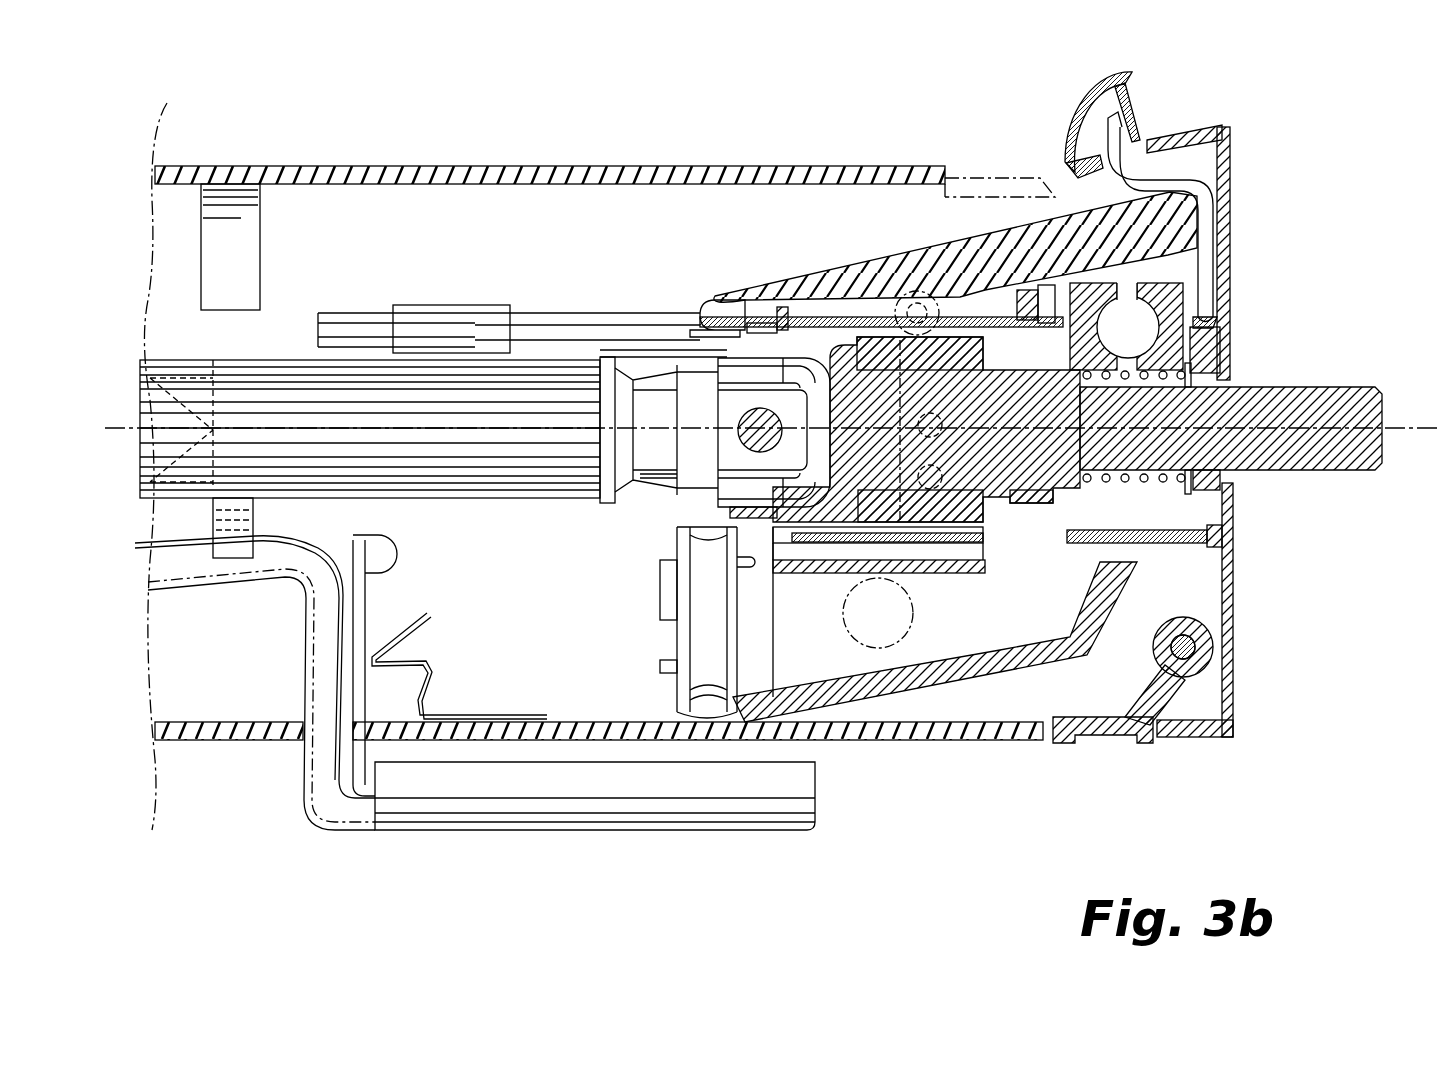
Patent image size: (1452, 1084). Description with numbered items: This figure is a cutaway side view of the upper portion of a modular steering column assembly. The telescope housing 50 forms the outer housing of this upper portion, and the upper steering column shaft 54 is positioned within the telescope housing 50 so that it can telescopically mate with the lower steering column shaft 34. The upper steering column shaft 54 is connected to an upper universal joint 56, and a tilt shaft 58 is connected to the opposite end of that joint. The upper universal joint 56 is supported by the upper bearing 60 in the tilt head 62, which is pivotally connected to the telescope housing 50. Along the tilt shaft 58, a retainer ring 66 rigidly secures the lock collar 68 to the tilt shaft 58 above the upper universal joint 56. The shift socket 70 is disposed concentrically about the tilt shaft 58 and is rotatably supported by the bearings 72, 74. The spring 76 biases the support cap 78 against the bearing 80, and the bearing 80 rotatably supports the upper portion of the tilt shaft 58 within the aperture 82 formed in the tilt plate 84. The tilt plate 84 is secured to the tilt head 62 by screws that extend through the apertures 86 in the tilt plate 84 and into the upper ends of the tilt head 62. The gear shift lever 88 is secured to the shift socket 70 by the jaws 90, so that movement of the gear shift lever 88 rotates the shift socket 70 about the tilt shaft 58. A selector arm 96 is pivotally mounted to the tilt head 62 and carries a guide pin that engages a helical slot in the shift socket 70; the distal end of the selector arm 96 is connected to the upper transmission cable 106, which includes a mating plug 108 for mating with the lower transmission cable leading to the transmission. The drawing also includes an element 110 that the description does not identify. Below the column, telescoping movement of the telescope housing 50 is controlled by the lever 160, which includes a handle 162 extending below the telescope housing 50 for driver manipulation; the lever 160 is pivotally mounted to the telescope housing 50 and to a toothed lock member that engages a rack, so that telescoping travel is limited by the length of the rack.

The lower steering column shaft 34 is at (200, 362).
The telescope housing 50 is at (694, 405).
The upper steering column shaft 54 is at (492, 500).
The upper universal joint 56 is at (725, 492).
The tilt shaft 58 is at (1360, 476).
The upper bearing 60 is at (722, 298).
The tilt head 62 is at (945, 270).
The retainer ring 66 is at (1010, 505).
The lock collar 68 is at (855, 318).
The shift socket 70 is at (997, 316).
The bearing 72 is at (783, 305).
The bearing 74 is at (1213, 313).
The spring 76 is at (1097, 473).
The support cap 78 is at (1180, 480).
The bearing 80 is at (1227, 472).
The aperture 82 is at (1230, 380).
The tilt plate 84 is at (1233, 712).
The apertures 86 is at (1228, 210).
The gear shift lever 88 is at (1133, 200).
The jaws 90 is at (1167, 280).
The selector arm 96 is at (888, 298).
The upper transmission cable 106 is at (611, 320).
The mating plug 108 is at (489, 304).
The gas tube 110 is at (382, 312).
The lever 160 is at (300, 793).
The handle 162 is at (407, 833).